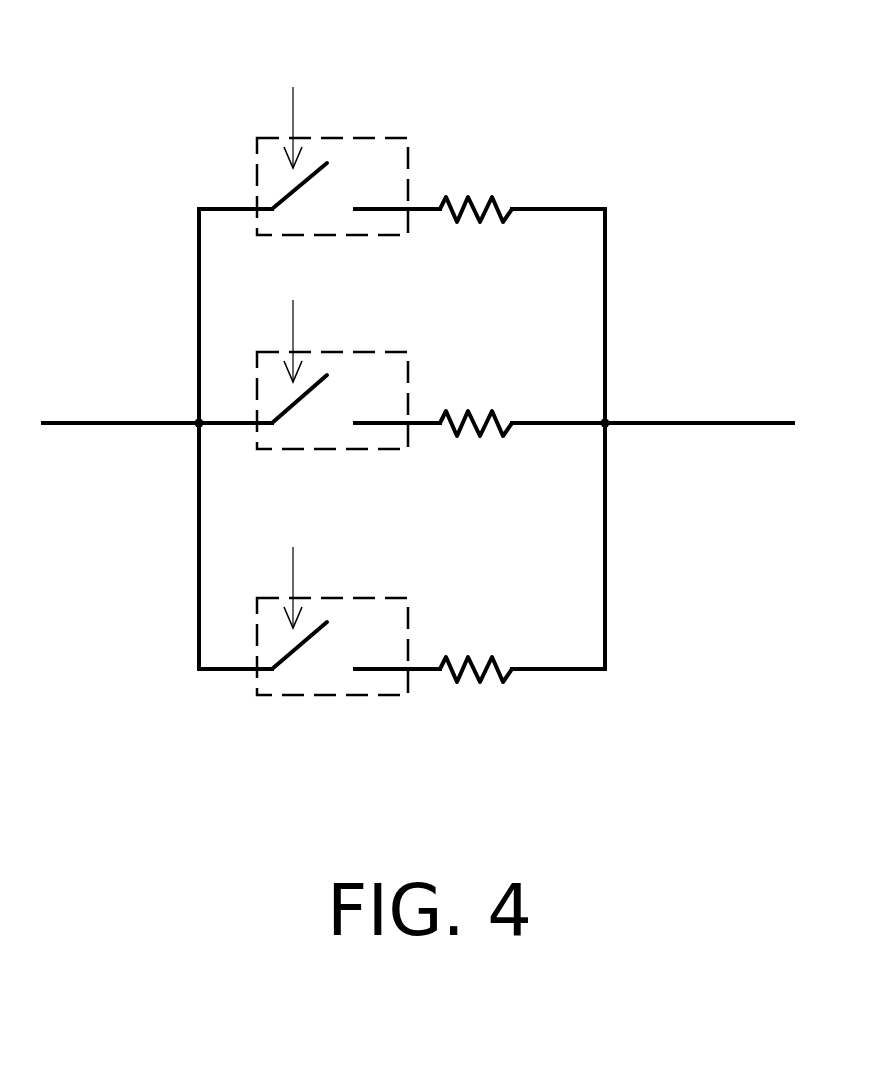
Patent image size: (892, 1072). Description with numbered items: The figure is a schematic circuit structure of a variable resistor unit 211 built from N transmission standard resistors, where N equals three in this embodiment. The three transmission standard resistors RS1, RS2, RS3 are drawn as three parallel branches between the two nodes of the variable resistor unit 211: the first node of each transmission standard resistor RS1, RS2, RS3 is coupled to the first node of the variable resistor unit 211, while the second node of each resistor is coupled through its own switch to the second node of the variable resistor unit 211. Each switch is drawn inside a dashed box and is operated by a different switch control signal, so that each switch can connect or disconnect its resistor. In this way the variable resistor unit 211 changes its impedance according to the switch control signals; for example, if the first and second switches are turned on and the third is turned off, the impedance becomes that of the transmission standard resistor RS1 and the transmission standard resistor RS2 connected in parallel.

The variable resistor unit 211 is at (418, 440).
The first transmission standard resistor RS1 is at (476, 181).
The second transmission standard resistor RS2 is at (476, 394).
The third transmission standard resistor RS3 is at (476, 641).